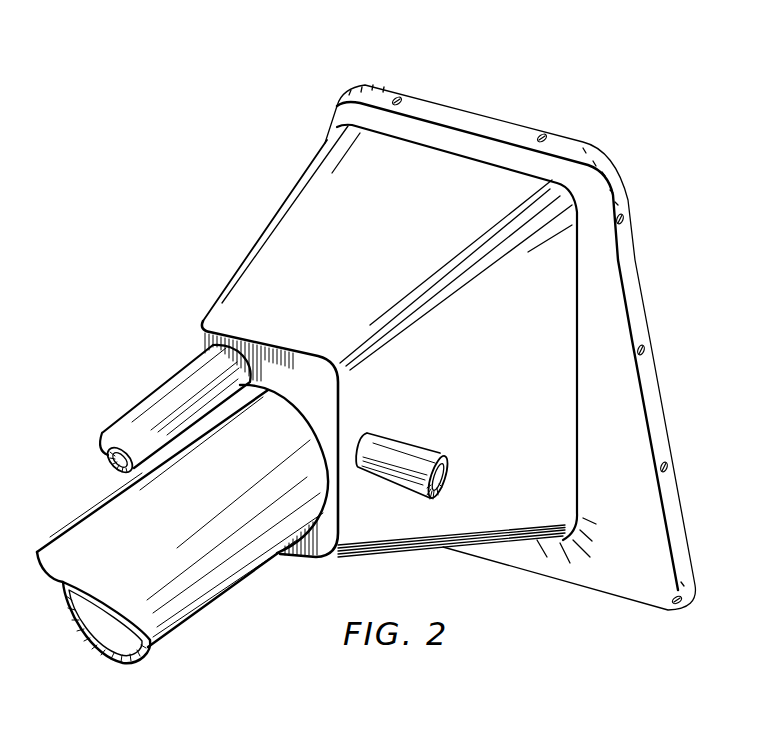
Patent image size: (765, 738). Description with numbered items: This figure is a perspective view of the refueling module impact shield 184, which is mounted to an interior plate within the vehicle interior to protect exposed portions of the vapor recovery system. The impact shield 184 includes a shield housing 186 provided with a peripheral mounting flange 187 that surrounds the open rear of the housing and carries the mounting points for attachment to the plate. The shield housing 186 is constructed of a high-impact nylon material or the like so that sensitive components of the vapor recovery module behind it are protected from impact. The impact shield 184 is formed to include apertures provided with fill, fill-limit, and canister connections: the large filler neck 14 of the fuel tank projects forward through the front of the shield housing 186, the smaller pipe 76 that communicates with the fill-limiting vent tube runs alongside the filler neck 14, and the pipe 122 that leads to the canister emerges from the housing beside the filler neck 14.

The filler neck 14 is at (180, 583).
The pipe 76 is at (132, 432).
The pipe 122 is at (418, 455).
The refueling module impact shield 184 is at (450, 321).
The shield housing 186 is at (307, 227).
The peripheral mounting flange 187 is at (638, 310).